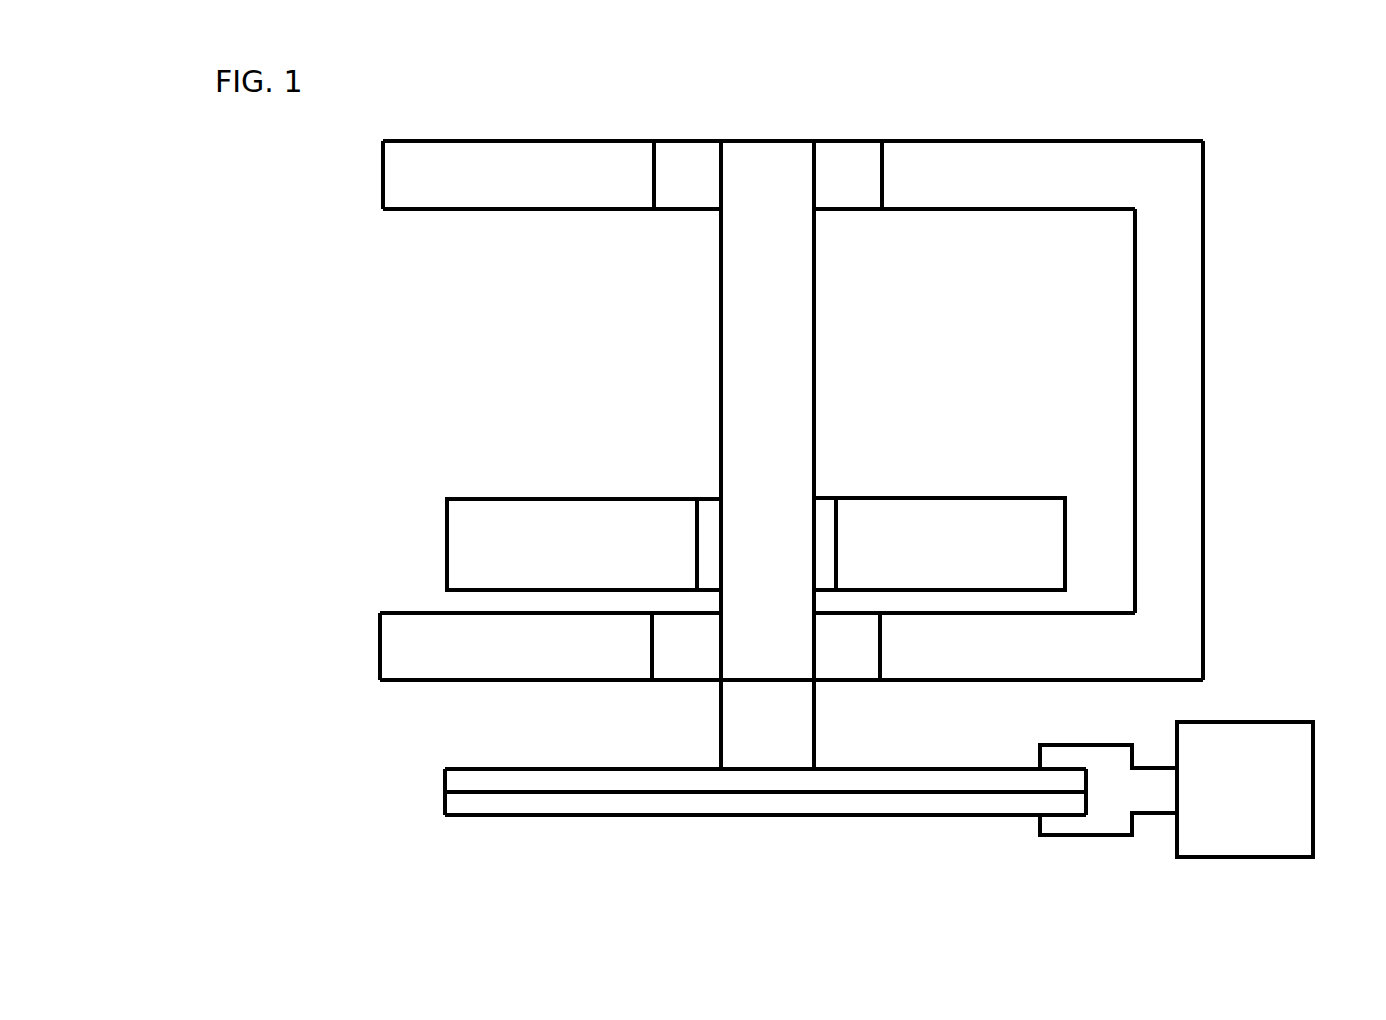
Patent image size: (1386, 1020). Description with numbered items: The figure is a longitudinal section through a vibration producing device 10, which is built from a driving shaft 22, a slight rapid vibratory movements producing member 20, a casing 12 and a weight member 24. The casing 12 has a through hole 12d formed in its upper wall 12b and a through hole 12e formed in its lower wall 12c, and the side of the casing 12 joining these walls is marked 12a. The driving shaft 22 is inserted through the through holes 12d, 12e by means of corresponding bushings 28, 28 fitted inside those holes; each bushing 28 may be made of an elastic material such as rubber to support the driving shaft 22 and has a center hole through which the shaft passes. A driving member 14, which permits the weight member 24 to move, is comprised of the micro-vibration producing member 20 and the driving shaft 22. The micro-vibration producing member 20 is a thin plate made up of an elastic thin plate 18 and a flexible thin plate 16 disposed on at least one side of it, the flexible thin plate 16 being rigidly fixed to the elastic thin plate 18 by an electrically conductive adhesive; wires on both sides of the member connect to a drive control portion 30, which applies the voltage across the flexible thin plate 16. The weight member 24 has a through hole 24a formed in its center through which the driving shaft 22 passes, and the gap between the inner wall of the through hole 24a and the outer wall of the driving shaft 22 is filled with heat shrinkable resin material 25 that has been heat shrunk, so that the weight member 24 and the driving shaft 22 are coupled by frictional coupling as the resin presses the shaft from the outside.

The vibration producing device 10 is at (460, 105).
The casing 12 is at (1155, 163).
The side wall of housing 12a is at (1175, 462).
The upper wall 12b is at (943, 163).
The lower wall 12c is at (408, 643).
The through hole 12d is at (663, 150).
The through hole 12e is at (867, 668).
The driving member 14 is at (451, 742).
The flexible thin plate 16 is at (453, 805).
The elastic thin plate 18 is at (447, 780).
The micro-vibration producing member 20 is at (348, 750).
The driving shaft 22 is at (730, 298).
The weight member 24 is at (470, 522).
The through hole 24a is at (822, 533).
The heat shrinkable resin material 25 is at (708, 528).
The bushing 28 is at (845, 153).
The drive control portion 30 is at (1238, 738).